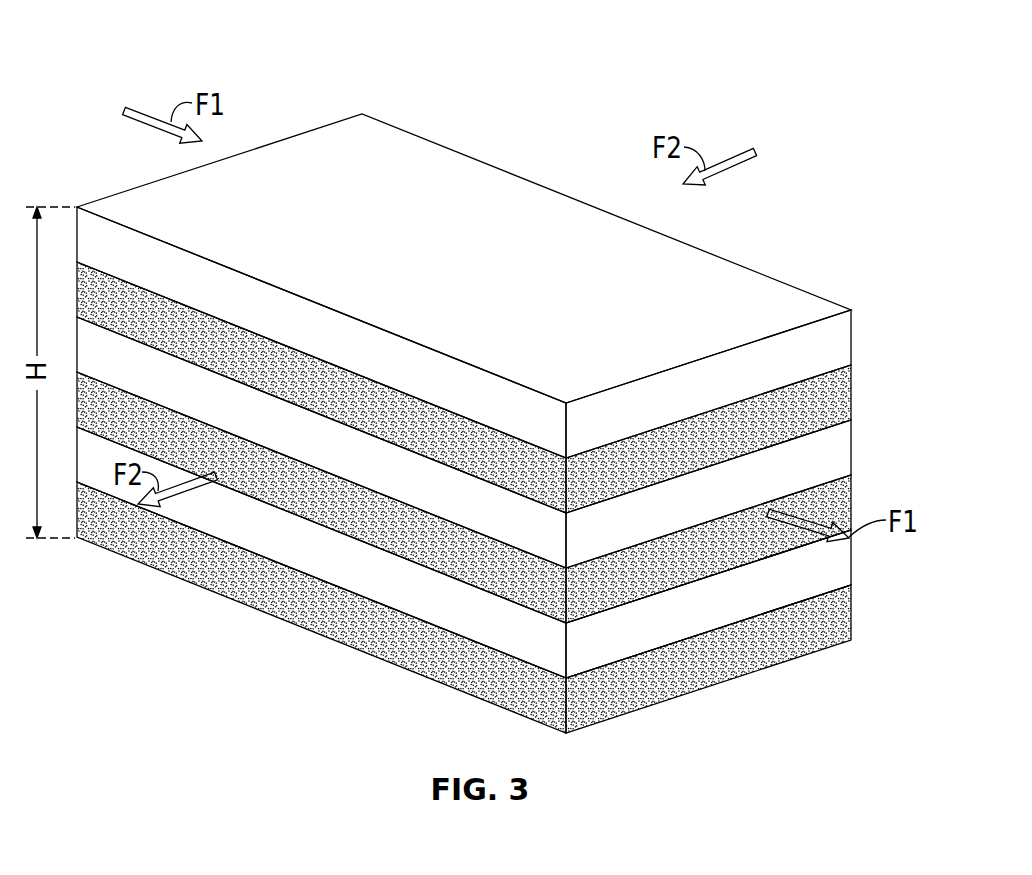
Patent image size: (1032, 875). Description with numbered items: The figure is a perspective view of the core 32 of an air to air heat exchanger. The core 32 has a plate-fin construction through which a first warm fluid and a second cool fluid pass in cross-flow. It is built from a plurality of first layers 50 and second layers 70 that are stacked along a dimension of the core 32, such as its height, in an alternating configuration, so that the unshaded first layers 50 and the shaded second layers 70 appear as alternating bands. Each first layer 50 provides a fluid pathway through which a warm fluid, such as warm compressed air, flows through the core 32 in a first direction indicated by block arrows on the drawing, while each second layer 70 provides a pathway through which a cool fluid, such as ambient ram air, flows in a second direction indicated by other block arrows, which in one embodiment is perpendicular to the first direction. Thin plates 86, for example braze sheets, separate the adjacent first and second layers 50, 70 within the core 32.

The core 32 is at (497, 385).
The first layer 50 is at (301, 149).
The second layer 70 is at (843, 399).
The thin plate 86 is at (680, 588).